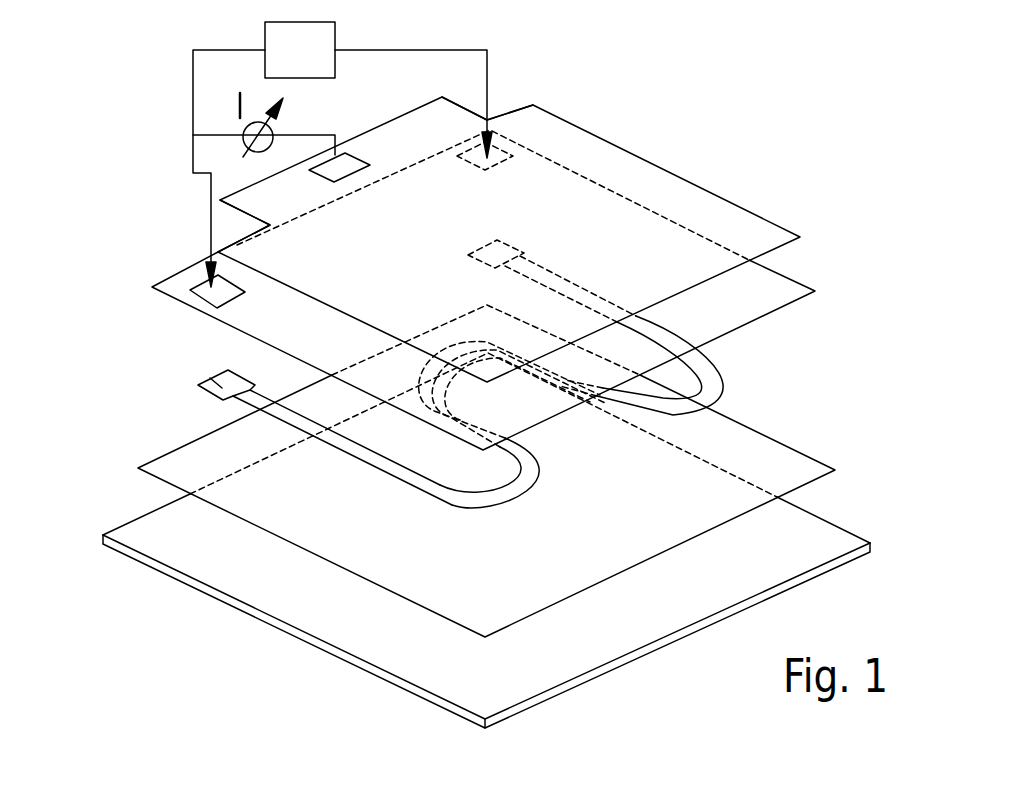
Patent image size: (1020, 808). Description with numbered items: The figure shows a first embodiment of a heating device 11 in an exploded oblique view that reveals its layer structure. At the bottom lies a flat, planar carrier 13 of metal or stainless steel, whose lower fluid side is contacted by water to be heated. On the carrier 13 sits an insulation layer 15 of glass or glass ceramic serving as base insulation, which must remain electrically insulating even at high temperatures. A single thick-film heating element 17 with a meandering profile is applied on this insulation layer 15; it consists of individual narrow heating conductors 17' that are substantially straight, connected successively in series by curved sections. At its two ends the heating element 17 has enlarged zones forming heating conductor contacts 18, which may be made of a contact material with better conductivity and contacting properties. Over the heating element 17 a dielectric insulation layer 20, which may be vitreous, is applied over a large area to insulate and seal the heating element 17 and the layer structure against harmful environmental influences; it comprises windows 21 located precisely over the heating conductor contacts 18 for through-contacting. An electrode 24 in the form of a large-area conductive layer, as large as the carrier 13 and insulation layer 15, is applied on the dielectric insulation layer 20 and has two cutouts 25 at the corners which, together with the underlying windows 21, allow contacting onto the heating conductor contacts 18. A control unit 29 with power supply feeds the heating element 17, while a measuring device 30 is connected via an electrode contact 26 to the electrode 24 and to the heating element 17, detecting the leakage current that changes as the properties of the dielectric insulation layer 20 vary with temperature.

The heating device 11 is at (828, 105).
The carrier 13 is at (830, 540).
The insulation layer 15 is at (803, 460).
The heating element 17 is at (565, 412).
The heating conductors 17' is at (500, 398).
The heating conductor contacts 18 is at (198, 383).
The dielectric insulation layer 20 is at (795, 290).
The windows 21 is at (190, 282).
The electrode 24 is at (775, 223).
The cutouts 25 is at (228, 212).
The electrode contact 26 is at (356, 152).
The control unit 29 is at (284, 66).
The measuring device 30 is at (204, 105).